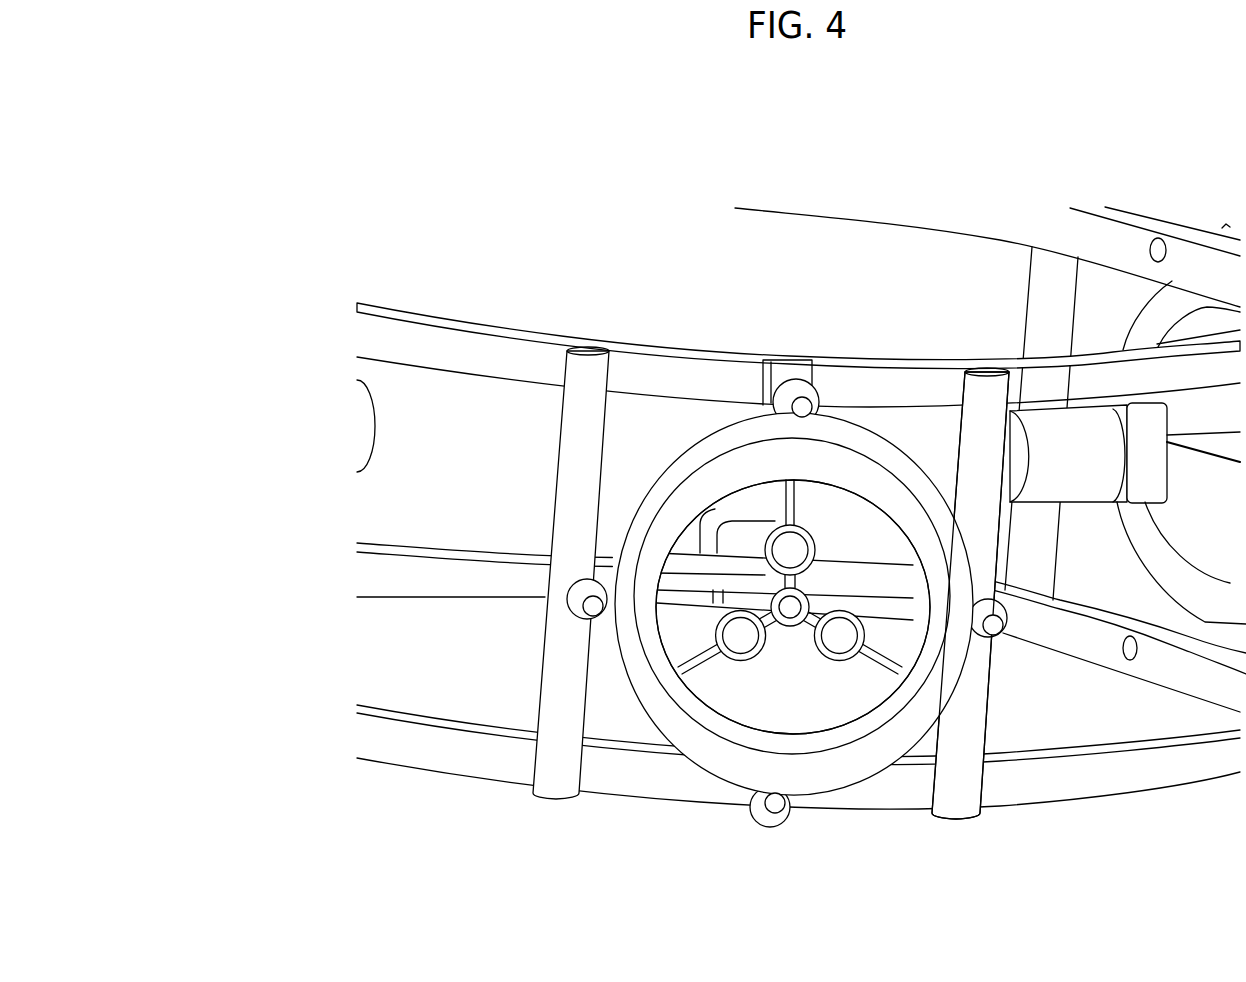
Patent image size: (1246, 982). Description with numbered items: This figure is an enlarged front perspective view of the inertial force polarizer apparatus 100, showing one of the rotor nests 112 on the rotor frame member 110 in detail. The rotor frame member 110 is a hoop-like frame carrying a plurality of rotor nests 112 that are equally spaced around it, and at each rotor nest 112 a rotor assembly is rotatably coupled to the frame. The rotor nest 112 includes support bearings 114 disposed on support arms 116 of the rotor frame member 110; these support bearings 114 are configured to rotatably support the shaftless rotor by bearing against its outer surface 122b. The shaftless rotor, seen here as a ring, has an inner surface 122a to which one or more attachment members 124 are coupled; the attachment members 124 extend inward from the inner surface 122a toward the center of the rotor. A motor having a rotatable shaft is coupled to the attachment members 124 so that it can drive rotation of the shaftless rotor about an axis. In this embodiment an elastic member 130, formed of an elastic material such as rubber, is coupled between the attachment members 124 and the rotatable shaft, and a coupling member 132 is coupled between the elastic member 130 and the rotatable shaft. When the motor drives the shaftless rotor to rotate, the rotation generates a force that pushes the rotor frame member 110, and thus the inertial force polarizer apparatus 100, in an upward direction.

The inertial force polarizer apparatus 100 is at (287, 186).
The rotor frame member 110 is at (418, 314).
The rotor nest 112 is at (771, 523).
The support bearing 114 is at (790, 380).
The support arm 116 is at (806, 405).
The inner surface 122a is at (830, 733).
The outer surface 122b is at (868, 447).
The attachment member 124 is at (795, 507).
The elastic member 130 is at (827, 652).
The coupling member 132 is at (806, 597).